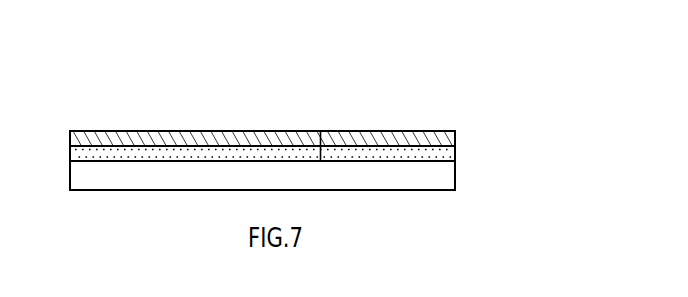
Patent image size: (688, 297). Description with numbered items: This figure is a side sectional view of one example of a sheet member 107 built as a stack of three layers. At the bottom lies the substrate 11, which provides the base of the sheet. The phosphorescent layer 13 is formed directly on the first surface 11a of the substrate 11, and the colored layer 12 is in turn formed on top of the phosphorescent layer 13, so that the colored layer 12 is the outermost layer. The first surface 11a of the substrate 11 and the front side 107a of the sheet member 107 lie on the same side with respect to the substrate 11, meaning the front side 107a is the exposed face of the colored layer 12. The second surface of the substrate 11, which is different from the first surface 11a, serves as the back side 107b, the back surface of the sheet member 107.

The sheet member 107 is at (128, 121).
The front side 107a is at (395, 130).
The back side 107b is at (420, 191).
The substrate 11 is at (449, 172).
The first surface 11a is at (318, 130).
The colored layer 12 is at (449, 134).
The phosphorescent layer 13 is at (449, 153).